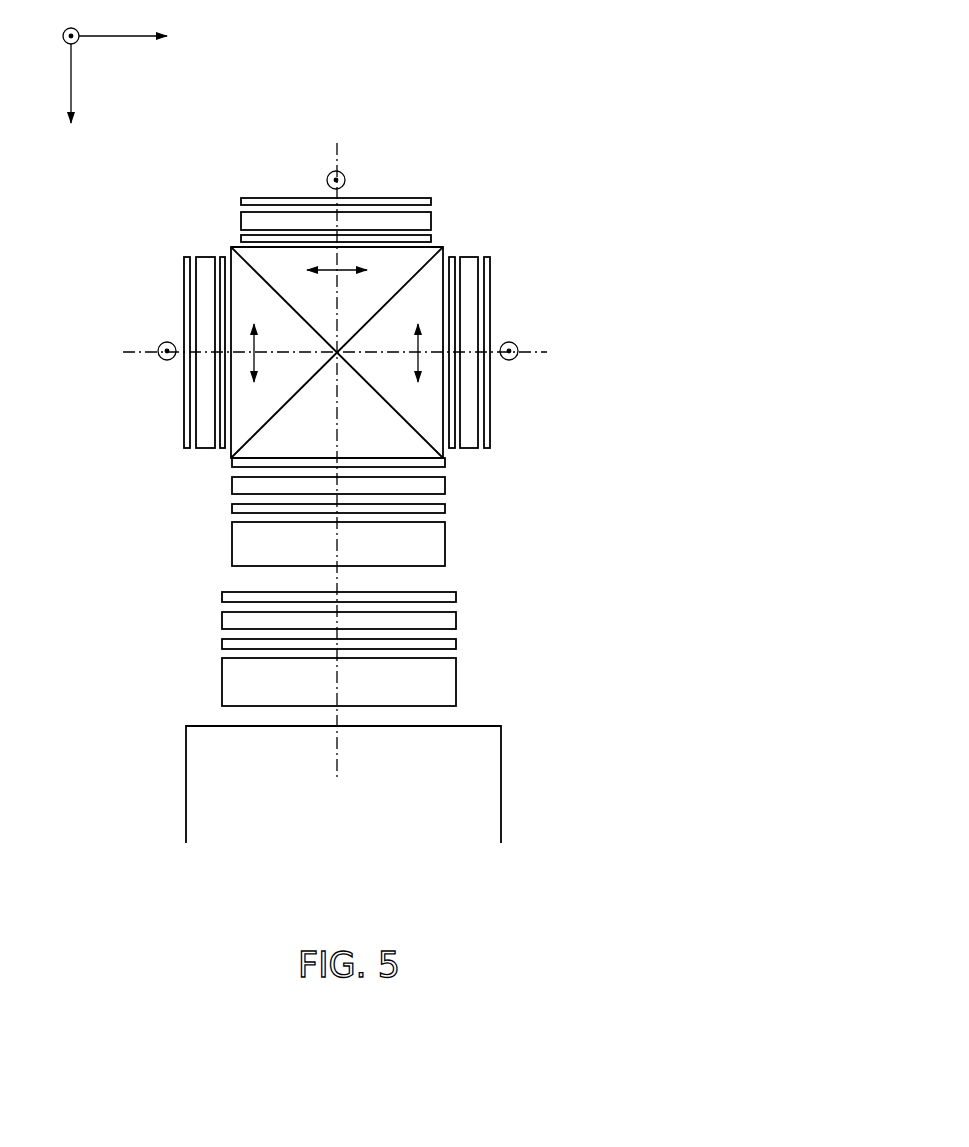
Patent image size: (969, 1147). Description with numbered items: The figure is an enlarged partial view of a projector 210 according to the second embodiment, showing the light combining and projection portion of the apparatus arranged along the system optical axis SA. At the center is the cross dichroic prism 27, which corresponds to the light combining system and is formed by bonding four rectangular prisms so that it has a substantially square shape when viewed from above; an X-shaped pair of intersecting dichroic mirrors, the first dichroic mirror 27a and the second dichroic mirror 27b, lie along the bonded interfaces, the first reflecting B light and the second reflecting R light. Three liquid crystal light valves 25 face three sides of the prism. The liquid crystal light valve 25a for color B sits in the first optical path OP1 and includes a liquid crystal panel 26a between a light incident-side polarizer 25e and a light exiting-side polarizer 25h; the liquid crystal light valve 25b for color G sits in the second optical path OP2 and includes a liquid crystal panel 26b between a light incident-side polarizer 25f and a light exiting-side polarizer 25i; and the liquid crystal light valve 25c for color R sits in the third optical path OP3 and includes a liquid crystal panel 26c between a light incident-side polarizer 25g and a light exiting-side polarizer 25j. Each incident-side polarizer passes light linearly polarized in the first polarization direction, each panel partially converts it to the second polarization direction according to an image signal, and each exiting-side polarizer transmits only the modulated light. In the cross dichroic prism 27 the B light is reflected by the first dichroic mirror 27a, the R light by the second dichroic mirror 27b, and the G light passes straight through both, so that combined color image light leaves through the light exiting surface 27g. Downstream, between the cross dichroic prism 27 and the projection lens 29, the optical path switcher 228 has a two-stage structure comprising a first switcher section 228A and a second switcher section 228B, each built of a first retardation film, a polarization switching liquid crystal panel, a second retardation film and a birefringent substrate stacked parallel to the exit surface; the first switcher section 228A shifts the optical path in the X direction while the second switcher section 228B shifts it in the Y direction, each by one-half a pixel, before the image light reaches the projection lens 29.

The projector 210 is at (648, 30).
The liquid crystal light valves 25 is at (532, 233).
The liquid crystal light valve for color B 25a is at (536, 361).
The liquid crystal light valve for color G 25b is at (375, 175).
The liquid crystal light valve for color R 25c is at (142, 387).
The light incident-side polarizer 25e is at (490, 300).
The light incident-side polarizer 25f is at (307, 202).
The light incident-side polarizer 25g is at (187, 398).
The light exiting-side polarizer 25h is at (450, 273).
The light exiting-side polarizer 25i is at (283, 240).
The light exiting-side polarizer 25j is at (225, 400).
The liquid crystal panel 26a is at (473, 330).
The liquid crystal panel 26b is at (380, 217).
The liquid crystal panel 26c is at (203, 377).
The cross dichroic prism 27 is at (313, 360).
The first dichroic mirror 27a is at (427, 268).
The second dichroic mirror 27b is at (262, 283).
The light exiting surface 27g is at (257, 247).
The optical path switcher 228 is at (188, 677).
The first switcher section 228A is at (448, 514).
The second switcher section 228B is at (443, 649).
The projection lens 29 is at (202, 812).
The system optical axis SA is at (337, 578).
The first optical path OP1 is at (520, 351).
The second optical path OP2 is at (340, 143).
The third optical path OP3 is at (137, 350).